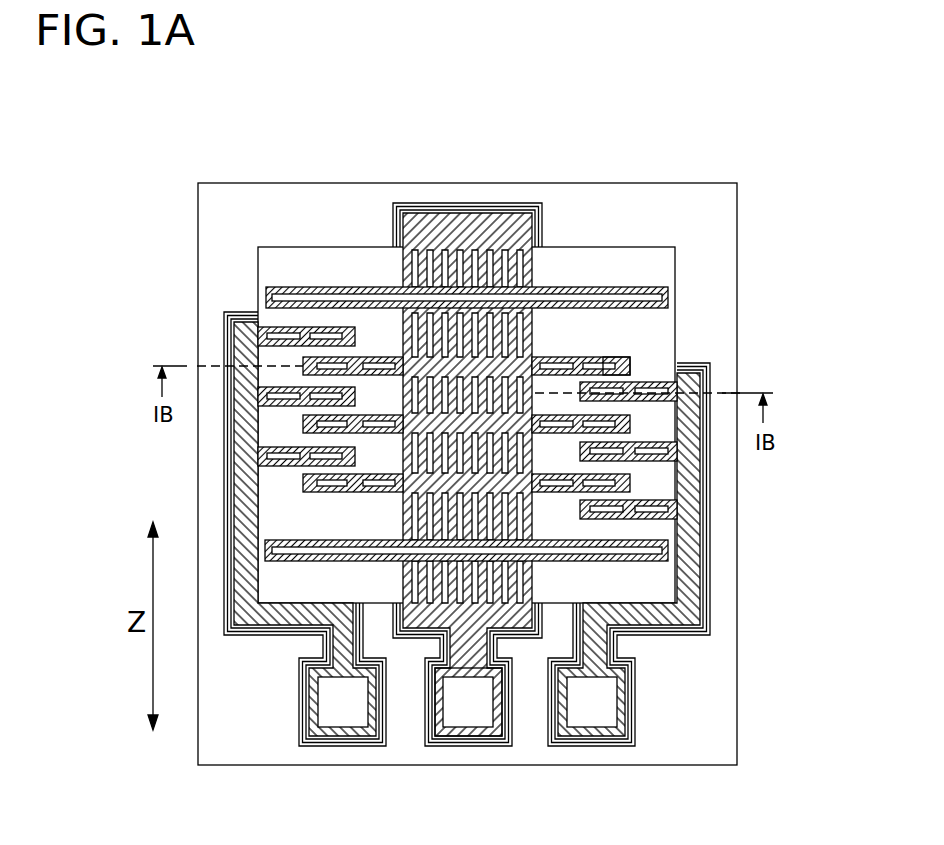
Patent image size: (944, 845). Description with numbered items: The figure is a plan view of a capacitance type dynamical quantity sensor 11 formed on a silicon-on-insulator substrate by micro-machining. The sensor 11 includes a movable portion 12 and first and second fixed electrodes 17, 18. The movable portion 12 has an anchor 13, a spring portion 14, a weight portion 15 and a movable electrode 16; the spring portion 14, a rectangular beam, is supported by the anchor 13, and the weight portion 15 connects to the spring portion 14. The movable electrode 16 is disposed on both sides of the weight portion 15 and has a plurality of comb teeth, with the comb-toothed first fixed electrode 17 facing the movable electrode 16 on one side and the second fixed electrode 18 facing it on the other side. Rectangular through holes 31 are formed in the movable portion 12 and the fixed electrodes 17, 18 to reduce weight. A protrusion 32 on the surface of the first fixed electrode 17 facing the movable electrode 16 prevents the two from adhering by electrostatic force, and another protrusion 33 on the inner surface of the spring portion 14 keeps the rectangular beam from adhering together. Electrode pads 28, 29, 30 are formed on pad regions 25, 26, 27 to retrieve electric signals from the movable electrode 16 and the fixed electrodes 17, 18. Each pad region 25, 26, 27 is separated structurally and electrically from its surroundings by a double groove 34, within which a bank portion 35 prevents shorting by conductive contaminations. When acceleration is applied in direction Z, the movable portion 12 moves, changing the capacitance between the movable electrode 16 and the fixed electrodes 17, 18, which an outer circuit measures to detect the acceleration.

The sensor 11 is at (168, 163).
The movable portion 12 is at (471, 214).
The anchor 13 is at (535, 263).
The spring portion 14 is at (668, 297).
The weight portion 15 is at (532, 335).
The movable electrode 16 is at (303, 361).
The first fixed electrode 17 is at (303, 328).
The second fixed electrode 18 is at (625, 403).
The pad region 25 is at (477, 710).
The pad region 26 is at (323, 735).
The pad region 27 is at (595, 733).
The electrode pad 28 is at (478, 733).
The electrode pad 29 is at (338, 710).
The electrode pad 30 is at (608, 710).
The through holes 31 is at (506, 255).
The protrusion 32 is at (606, 358).
The protrusion 33 is at (388, 296).
The double groove 34 is at (635, 677).
The bank portion 35 is at (633, 695).